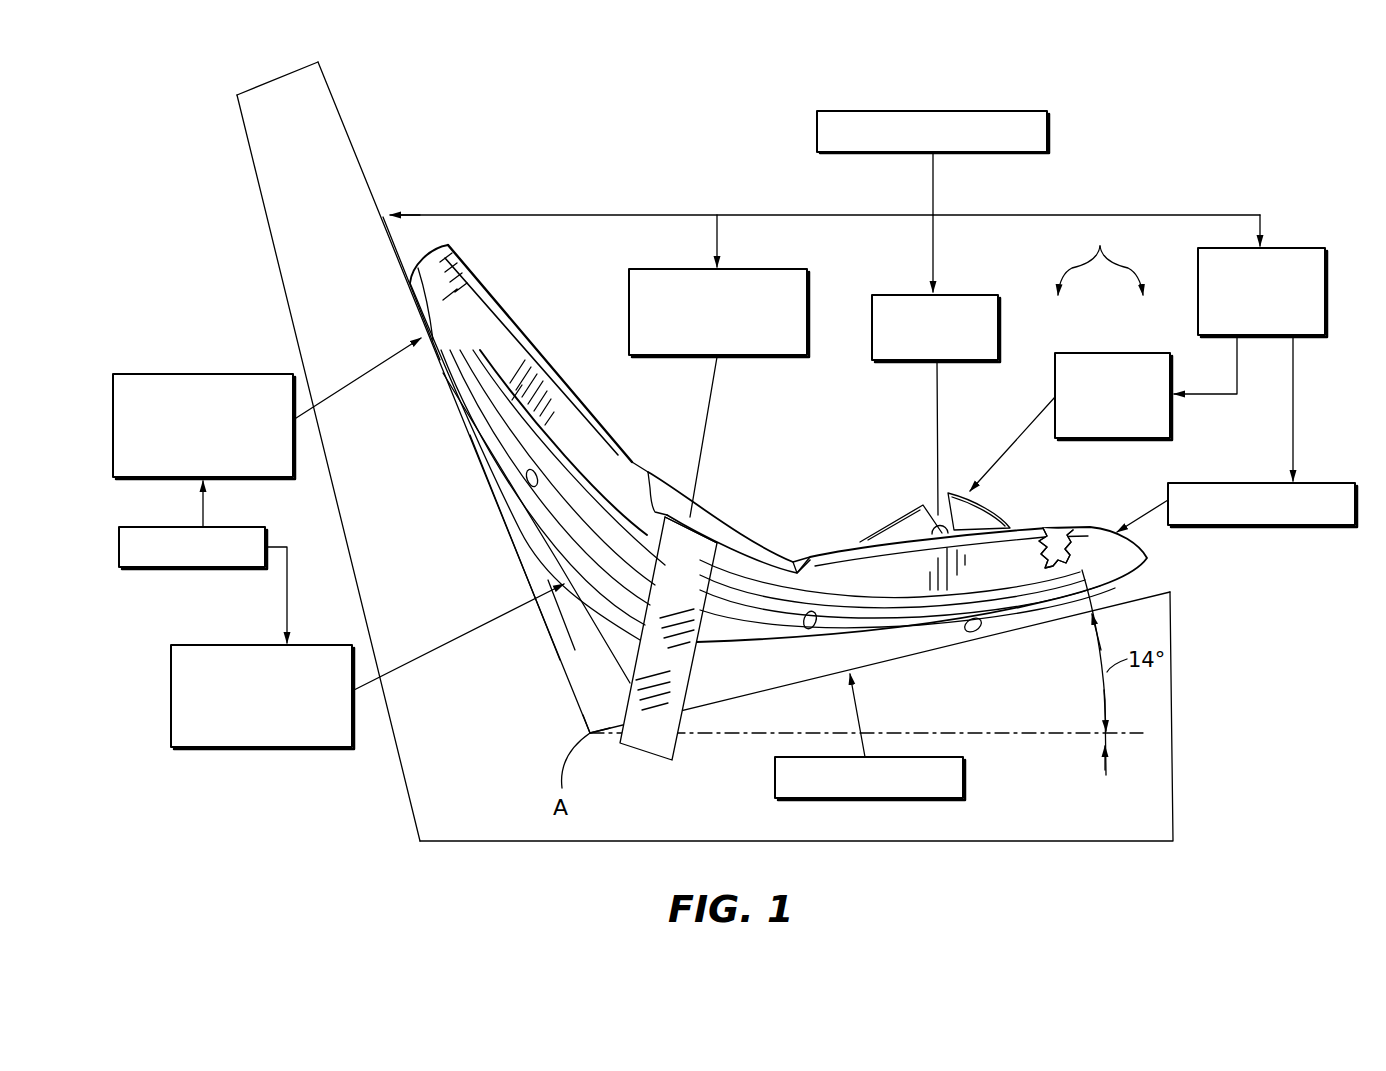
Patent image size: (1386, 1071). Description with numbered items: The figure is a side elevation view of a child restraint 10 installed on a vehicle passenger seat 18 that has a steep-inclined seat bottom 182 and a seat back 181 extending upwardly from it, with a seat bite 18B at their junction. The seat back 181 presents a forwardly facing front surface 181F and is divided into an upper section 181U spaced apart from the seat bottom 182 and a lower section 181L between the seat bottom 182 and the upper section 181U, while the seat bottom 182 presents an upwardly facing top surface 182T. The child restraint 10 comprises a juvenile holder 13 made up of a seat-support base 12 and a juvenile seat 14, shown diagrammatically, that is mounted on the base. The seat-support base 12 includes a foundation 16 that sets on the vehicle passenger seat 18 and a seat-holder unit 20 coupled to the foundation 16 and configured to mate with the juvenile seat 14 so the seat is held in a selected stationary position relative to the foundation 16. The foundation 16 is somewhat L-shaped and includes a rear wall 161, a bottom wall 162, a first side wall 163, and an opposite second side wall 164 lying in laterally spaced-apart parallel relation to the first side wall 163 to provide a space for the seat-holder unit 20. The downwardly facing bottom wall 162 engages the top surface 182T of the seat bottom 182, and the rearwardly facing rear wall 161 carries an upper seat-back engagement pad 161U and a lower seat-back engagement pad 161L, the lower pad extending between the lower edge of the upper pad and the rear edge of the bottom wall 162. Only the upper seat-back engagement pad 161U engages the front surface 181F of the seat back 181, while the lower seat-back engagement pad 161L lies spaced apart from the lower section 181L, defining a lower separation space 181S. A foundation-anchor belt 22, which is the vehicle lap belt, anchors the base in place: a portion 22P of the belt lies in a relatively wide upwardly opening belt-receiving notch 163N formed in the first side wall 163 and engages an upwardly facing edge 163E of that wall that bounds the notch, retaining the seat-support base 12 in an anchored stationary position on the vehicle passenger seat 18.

The child restraint 10 is at (930, 110).
The seat-support base 12 is at (1197, 290).
The juvenile holder 13 is at (1100, 257).
The juvenile seat 14 is at (1003, 327).
The foundation 16 is at (1270, 527).
The vehicle passenger seat 18 is at (268, 78).
The seat-holder unit 20 is at (1107, 352).
The foundation-anchor belt 22 is at (628, 312).
The portion of foundation-anchor belt 22P is at (693, 516).
The rear wall 161 is at (193, 569).
The upper seat-back engagement pad 161U is at (200, 374).
The lower seat-back engagement pad 161L is at (260, 749).
The bottom wall 162 is at (965, 778).
The first side wall 163 is at (864, 578).
The belt-receiving notch 163N is at (672, 513).
The upwardly facing edge 163E is at (770, 558).
The second side wall 164 is at (1073, 527).
The seat back 181 is at (246, 148).
The front surface 181F is at (371, 190).
The upper section 181U is at (428, 332).
The lower section 181L is at (515, 538).
The lower separation space 181S is at (556, 600).
The seat bite 18B is at (598, 720).
The seat bottom 182 is at (982, 843).
The top surface 182T is at (1150, 591).